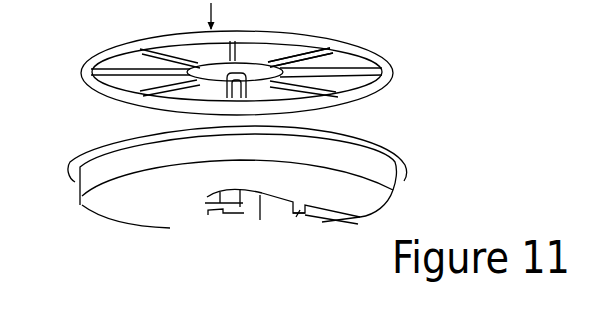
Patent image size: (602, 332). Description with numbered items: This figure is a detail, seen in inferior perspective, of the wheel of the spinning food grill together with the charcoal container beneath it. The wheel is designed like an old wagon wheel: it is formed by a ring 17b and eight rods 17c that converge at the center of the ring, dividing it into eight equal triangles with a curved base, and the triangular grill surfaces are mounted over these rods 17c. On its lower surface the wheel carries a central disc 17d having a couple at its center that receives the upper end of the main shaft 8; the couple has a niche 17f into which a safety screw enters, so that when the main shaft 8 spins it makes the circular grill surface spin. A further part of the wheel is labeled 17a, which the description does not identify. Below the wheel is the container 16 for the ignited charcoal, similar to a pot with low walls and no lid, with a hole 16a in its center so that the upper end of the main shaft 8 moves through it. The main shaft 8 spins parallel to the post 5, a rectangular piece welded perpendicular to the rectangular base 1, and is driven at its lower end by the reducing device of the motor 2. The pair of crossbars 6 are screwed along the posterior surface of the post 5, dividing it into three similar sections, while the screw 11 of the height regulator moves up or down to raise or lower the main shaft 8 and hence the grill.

The rectangular base 1 is at (246, 133).
The motor 2 is at (303, 208).
The post 5 is at (273, 203).
The crossbars 6 is at (230, 221).
The main shaft 8 is at (234, 187).
The screw 11 is at (306, 218).
The container 16 is at (197, 153).
The hole 16a is at (212, 197).
The hub 17a is at (233, 88).
The ring 17b is at (391, 103).
The rods 17c is at (125, 74).
The central disc 17d is at (255, 65).
The niche 17f is at (239, 101).